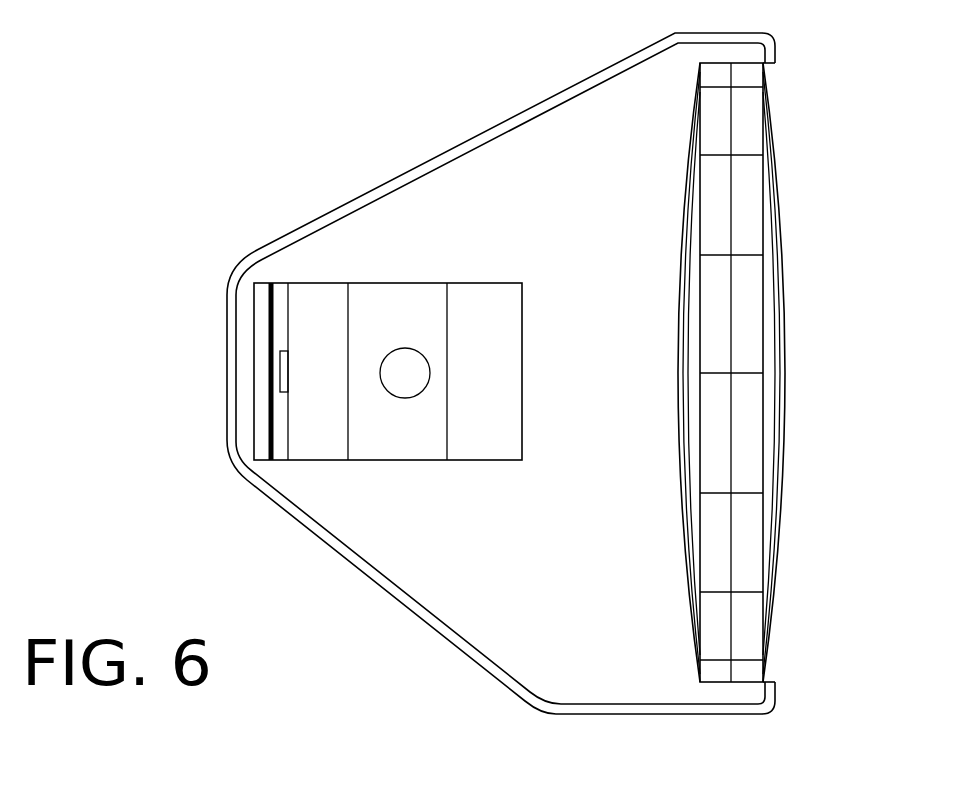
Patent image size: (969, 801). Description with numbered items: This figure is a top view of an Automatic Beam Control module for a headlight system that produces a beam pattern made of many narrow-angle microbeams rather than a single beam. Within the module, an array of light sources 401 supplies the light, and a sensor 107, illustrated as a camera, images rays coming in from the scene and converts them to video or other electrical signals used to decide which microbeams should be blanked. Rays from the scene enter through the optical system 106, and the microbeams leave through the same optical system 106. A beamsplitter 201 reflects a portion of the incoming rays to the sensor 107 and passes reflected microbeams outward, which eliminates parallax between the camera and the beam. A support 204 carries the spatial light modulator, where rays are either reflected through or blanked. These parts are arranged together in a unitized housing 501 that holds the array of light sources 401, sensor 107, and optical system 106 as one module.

The housing 501 is at (483, 675).
The optical system 106 is at (777, 583).
The beamsplitter 201 is at (347, 390).
The sensor 107 is at (522, 445).
The support 204 is at (255, 397).
The array of light sources 401 is at (290, 432).